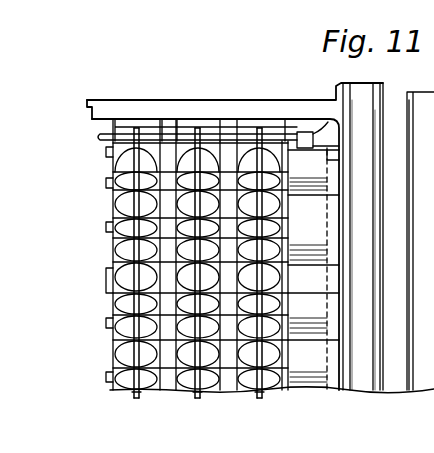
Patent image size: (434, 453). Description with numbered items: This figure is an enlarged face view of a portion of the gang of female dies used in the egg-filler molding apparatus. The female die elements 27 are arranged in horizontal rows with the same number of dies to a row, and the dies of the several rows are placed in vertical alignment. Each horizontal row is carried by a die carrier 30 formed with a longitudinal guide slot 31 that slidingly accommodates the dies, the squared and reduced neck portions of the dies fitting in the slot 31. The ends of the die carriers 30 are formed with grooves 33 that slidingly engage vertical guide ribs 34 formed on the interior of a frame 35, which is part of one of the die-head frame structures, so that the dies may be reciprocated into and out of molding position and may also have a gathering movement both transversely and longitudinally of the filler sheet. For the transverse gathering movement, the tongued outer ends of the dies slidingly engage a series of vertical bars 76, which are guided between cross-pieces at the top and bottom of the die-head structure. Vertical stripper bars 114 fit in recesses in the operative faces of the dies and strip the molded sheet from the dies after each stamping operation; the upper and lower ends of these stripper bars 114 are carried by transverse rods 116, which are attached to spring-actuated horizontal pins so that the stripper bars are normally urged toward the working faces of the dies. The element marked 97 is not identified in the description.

The female die elements 27 is at (118, 165).
The die carrier 30 is at (106, 270).
The longitudinal guide slot 31 is at (106, 226).
The grooves 33 is at (321, 238).
The vertical guide ribs 34 is at (333, 291).
The frame 35 is at (314, 105).
The vertical bars 76 is at (185, 124).
The notch 97 is at (88, 107).
The vertical stripper bars 114 is at (193, 398).
The transverse rods 116 is at (99, 136).